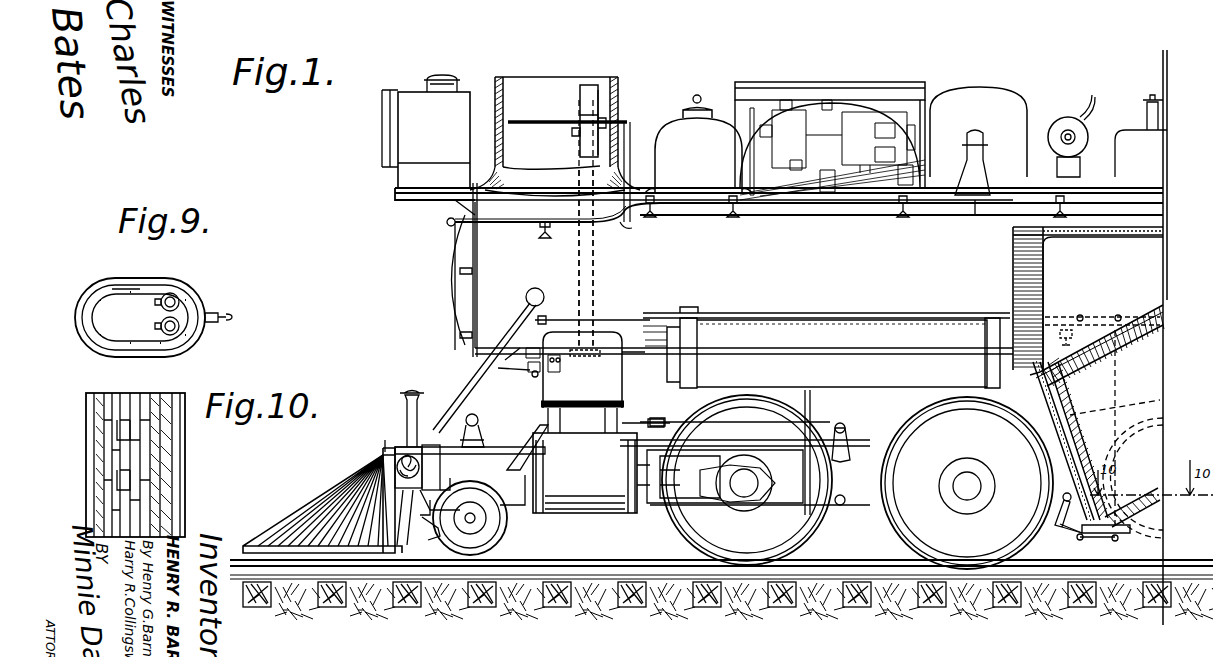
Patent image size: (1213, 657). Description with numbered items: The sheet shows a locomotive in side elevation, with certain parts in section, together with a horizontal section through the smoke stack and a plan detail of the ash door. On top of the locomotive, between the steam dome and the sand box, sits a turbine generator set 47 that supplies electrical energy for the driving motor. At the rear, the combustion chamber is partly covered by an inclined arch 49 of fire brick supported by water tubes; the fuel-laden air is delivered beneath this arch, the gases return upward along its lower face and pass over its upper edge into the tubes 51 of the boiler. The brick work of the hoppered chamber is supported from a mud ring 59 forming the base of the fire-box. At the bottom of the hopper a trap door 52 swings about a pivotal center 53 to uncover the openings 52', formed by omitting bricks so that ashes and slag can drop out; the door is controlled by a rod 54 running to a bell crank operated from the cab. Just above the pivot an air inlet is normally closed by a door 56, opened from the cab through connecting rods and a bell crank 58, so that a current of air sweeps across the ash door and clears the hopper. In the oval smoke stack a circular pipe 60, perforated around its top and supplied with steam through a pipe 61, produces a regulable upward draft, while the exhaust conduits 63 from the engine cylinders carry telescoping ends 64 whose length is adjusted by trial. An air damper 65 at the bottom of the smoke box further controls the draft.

In FIG. 1, the turbine generator set 47 is at (843, 120).
In FIG. 1, the inclined arch 49 is at (1150, 308).
In FIG. 1, the tubes of the boiler 51 is at (1046, 262).
In FIG. 1, the trap door 52 is at (1121, 528).
In FIG. 10, the openings 52' is at (159, 465).
In FIG. 1, the pivotal center 53 is at (1080, 540).
In FIG. 1, the rod 54 is at (1120, 441).
In FIG. 1, the door 56 is at (1056, 526).
In FIG. 1, the bell crank 58 is at (1070, 336).
In FIG. 1, the mud ring 59 is at (1040, 384).
In FIG. 1, the circular pipe 60 is at (527, 120).
In FIG. 9, the circular pipe 60 is at (117, 291).
In FIG. 1, the pipe 61 is at (784, 224).
In FIG. 1, the exhaust conduits 63 is at (588, 294).
In FIG. 1, the telescoping ends 64 is at (574, 92).
In FIG. 9, the telescoping ends 64 is at (182, 327).
In FIG. 1, the air damper 65 is at (512, 437).